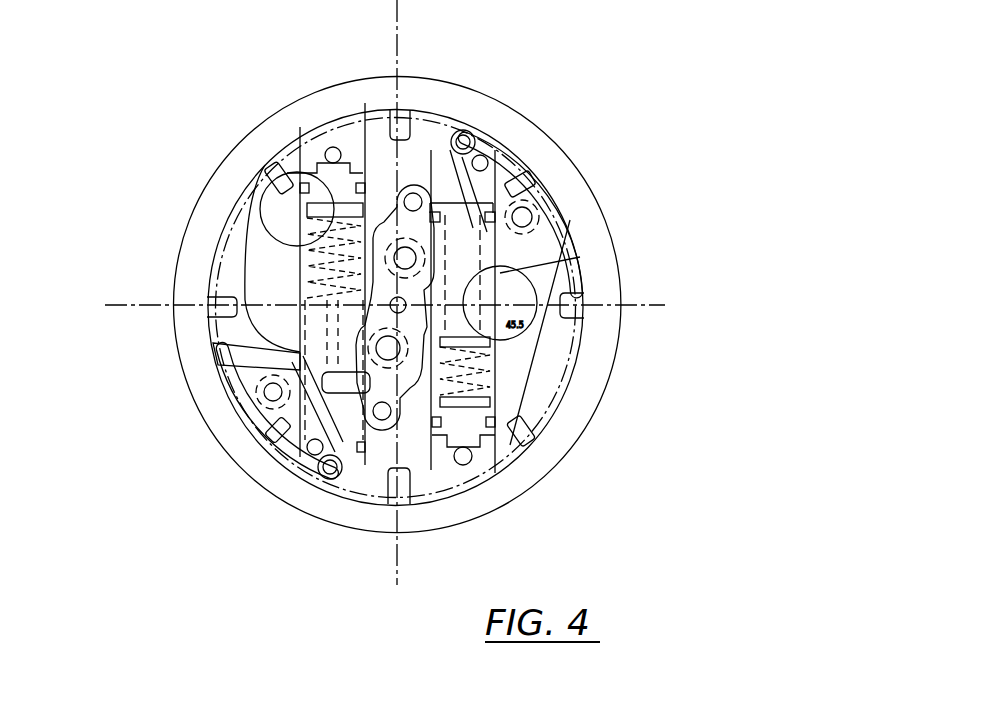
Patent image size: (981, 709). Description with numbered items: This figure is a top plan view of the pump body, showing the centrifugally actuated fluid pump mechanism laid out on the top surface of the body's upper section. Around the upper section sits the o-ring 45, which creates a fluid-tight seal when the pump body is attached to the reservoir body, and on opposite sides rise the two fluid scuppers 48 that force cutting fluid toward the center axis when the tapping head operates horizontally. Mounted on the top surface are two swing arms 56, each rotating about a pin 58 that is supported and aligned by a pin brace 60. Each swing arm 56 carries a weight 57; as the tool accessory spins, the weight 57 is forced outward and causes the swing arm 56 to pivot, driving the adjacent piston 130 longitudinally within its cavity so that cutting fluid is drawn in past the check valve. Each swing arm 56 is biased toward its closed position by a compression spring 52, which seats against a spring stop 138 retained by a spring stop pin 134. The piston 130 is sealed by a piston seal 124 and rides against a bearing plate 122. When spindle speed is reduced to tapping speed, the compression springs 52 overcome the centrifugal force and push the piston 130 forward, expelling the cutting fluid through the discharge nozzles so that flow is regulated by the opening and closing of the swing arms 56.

The o-ring 45 is at (515, 152).
The fluid scupper 48 is at (220, 352).
The compression spring 52 is at (300, 208).
The swing arm 56 is at (262, 205).
The weight 57 is at (262, 230).
The pin 58 is at (416, 258).
The pin brace 60 is at (393, 420).
The bearing plate 122 is at (400, 181).
The piston seal 124 is at (367, 452).
The piston 130 is at (297, 323).
The spring stop pin 134 is at (327, 150).
The spring stop 138 is at (318, 162).